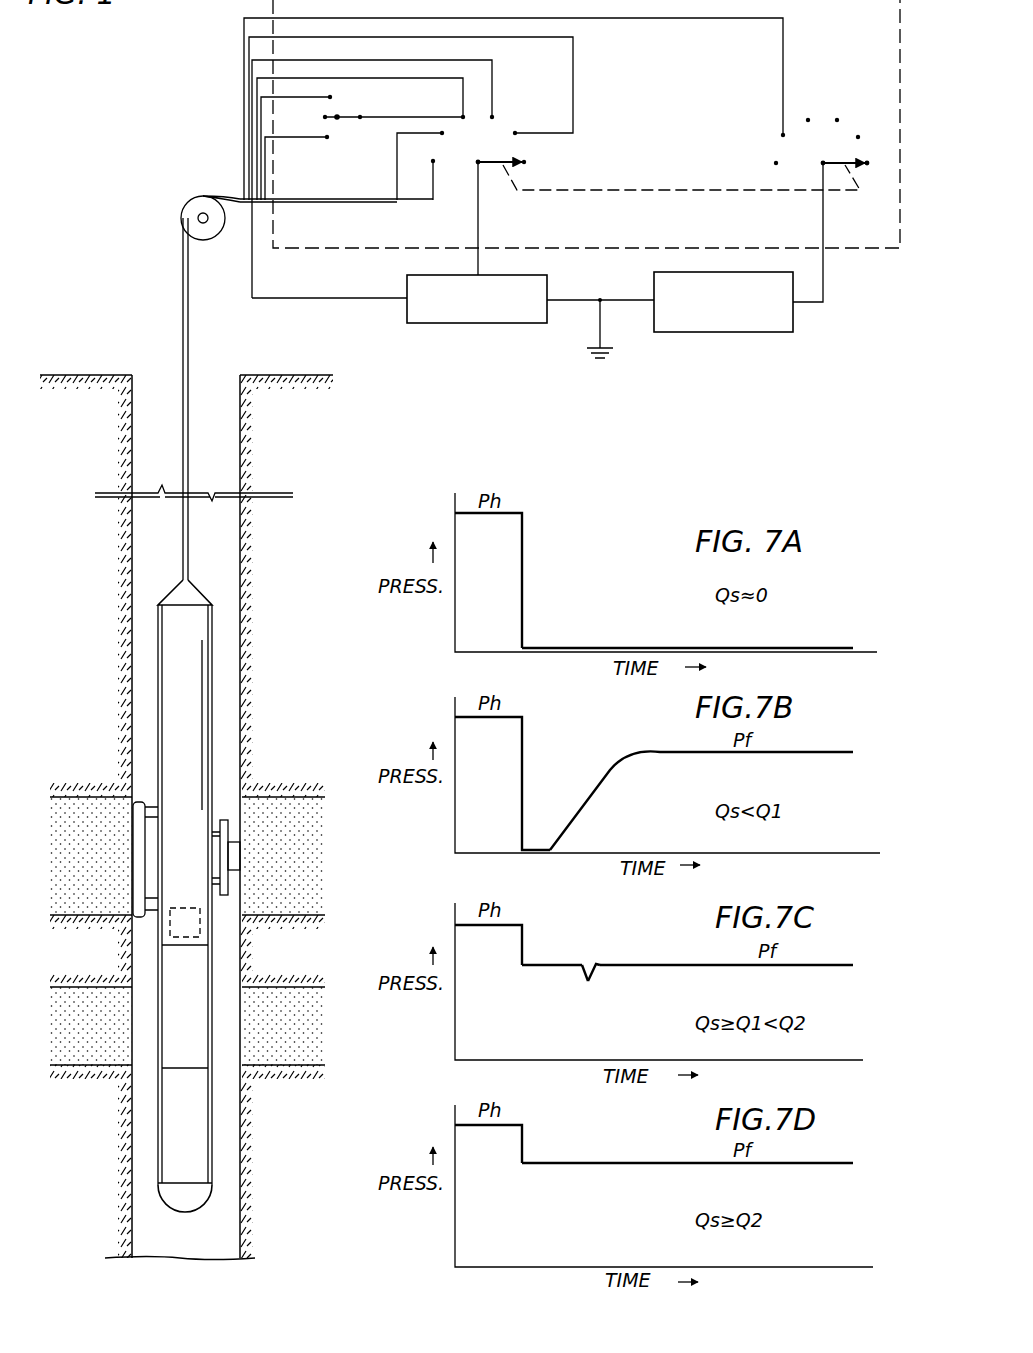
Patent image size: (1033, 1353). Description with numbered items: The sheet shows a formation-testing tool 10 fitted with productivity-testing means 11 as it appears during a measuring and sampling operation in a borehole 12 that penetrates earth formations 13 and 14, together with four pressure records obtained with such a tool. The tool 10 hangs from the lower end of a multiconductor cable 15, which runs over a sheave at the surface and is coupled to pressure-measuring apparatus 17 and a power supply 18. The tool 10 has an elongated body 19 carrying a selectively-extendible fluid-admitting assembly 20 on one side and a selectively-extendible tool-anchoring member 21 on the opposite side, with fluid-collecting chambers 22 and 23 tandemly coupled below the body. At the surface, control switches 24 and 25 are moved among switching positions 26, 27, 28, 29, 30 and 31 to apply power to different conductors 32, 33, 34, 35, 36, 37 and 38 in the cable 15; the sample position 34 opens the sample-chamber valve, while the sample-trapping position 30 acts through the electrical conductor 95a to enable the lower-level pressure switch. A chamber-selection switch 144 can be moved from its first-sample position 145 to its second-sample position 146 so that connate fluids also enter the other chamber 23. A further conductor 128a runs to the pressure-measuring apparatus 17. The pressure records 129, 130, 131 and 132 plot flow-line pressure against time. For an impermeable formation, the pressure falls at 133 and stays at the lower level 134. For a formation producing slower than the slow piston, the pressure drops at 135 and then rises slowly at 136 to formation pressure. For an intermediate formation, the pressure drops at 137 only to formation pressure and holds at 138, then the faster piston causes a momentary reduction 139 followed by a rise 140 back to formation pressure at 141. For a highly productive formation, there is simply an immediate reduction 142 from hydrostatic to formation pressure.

In FIG. 1, the formation-testing tool 10 is at (191, 896).
In FIG. 1, the productivity-testing means 11 is at (195, 925).
In FIG. 1, the borehole 12 is at (242, 432).
In FIG. 1, the earth formation 13 is at (286, 877).
In FIG. 1, the earth formation 14 is at (284, 1036).
In FIG. 1, the multiconductor cable 15 is at (188, 333).
In FIG. 1, the pressure-measuring apparatus 17 is at (486, 325).
In FIG. 1, the power supply 18 is at (736, 333).
In FIG. 1, the elongated body 19 is at (198, 640).
In FIG. 1, the fluid-admitting assembly 20 is at (234, 834).
In FIG. 1, the tool-anchoring member 21 is at (133, 852).
In FIG. 1, the fluid-collecting chamber 22 is at (193, 1022).
In FIG. 1, the fluid-collecting chamber 23 is at (193, 1129).
In FIG. 1, the control switch 24 is at (496, 186).
In FIG. 1, the control switch 25 is at (798, 178).
In FIG. 1, the switching position 26 is at (868, 160).
In FIG. 1, the switching position 27 is at (859, 135).
In FIG. 1, the switching position 28 is at (838, 117).
In FIG. 1, the switching position 29 is at (809, 117).
In FIG. 1, the sample trapping position 30 is at (782, 134).
In FIG. 1, the switching position 31 is at (774, 163).
In FIG. 1, the conductor 32 is at (573, 98).
In FIG. 1, the conductor 33 is at (492, 95).
In FIG. 1, the sample position conductor 34 is at (462, 100).
In FIG. 1, the conductor 35 is at (297, 98).
In FIG. 1, the conductor 36 is at (300, 139).
In FIG. 1, the conductor 37 is at (397, 165).
In FIG. 1, the conductor 38 is at (433, 180).
In FIG. 1, the electrical conductor 95a is at (698, 18).
In FIG. 1, the conductor 128a is at (307, 296).
In FIG. 1, the chamber selection switch 144 is at (360, 113).
In FIG. 1, the first sample position 145 is at (332, 96).
In FIG. 1, the second sample position 146 is at (329, 138).
In FIG. 7A, the pressure record 129 is at (654, 569).
In FIG. 7B, the pressure record 130 is at (654, 780).
In FIG. 7C, the pressure record 131 is at (654, 960).
In FIG. 7D, the pressure record 132 is at (654, 1131).
In FIG. 7A, the pressure reduction 133 is at (525, 580).
In FIG. 7A, the lower pressure level 134 is at (632, 647).
In FIG. 7B, the pressure drop 135 is at (525, 790).
In FIG. 7B, the pressure rise 136 is at (588, 805).
In FIG. 7C, the pressure drop 137 is at (525, 947).
In FIG. 7C, the pressure plateau 138 is at (540, 968).
In FIG. 7C, the momentary pressure reduction 139 is at (583, 972).
In FIG. 7C, the pressure rise 140 is at (595, 972).
In FIG. 7C, the formation pressure level 141 is at (662, 964).
In FIG. 7D, the immediate pressure reduction 142 is at (525, 1150).